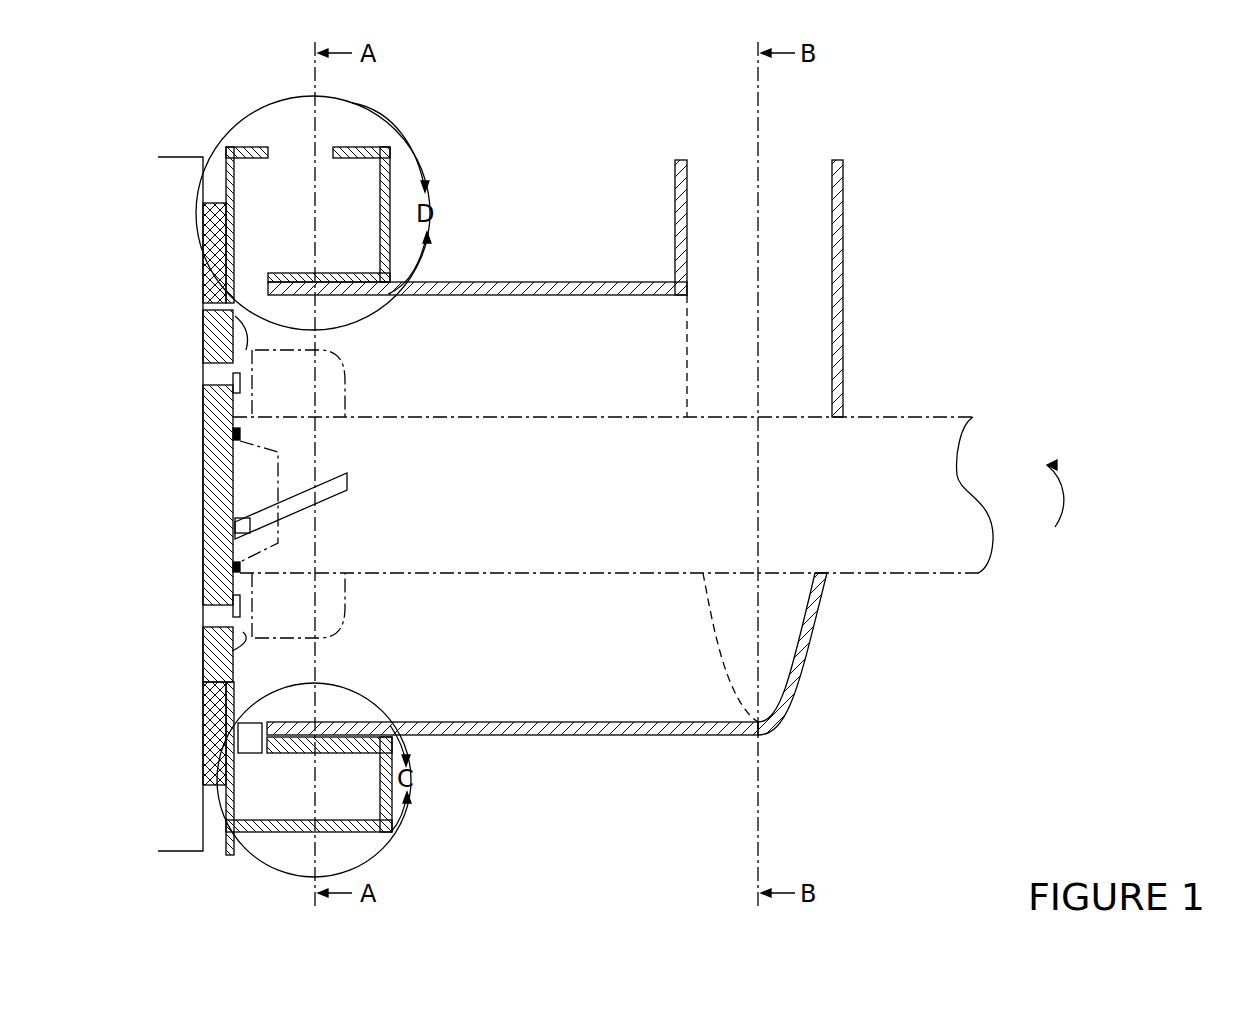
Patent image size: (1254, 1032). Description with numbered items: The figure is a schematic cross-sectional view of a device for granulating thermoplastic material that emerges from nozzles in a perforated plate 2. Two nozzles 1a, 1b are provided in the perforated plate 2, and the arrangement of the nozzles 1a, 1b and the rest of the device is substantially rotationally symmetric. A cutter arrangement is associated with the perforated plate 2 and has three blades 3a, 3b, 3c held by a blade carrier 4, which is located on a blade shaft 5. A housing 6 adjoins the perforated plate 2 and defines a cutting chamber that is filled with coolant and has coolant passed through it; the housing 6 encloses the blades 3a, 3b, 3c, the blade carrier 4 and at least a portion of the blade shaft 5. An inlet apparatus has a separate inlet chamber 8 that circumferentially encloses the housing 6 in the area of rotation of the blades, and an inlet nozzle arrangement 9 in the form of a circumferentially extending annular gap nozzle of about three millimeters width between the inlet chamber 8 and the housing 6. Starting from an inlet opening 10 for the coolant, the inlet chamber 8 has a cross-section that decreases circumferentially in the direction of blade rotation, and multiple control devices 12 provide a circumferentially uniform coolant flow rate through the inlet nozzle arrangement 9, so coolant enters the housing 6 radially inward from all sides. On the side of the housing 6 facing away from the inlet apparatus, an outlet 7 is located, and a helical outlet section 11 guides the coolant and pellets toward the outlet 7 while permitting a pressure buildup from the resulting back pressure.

The nozzle 1a is at (222, 363).
The nozzle 1b is at (222, 625).
The perforated plate 2 is at (203, 510).
The blade 3a is at (203, 318).
The blade 3b is at (203, 550).
The blade 3c is at (235, 650).
The blade carrier 4 is at (297, 622).
The blade shaft 5 is at (890, 430).
The housing 6 is at (538, 282).
The outlet 7 is at (832, 162).
The inlet chamber 8 is at (258, 177).
The inlet nozzle arrangement 9 is at (255, 263).
The inlet opening 10 is at (332, 147).
The outlet section 11 is at (805, 284).
The control device 12 is at (247, 752).